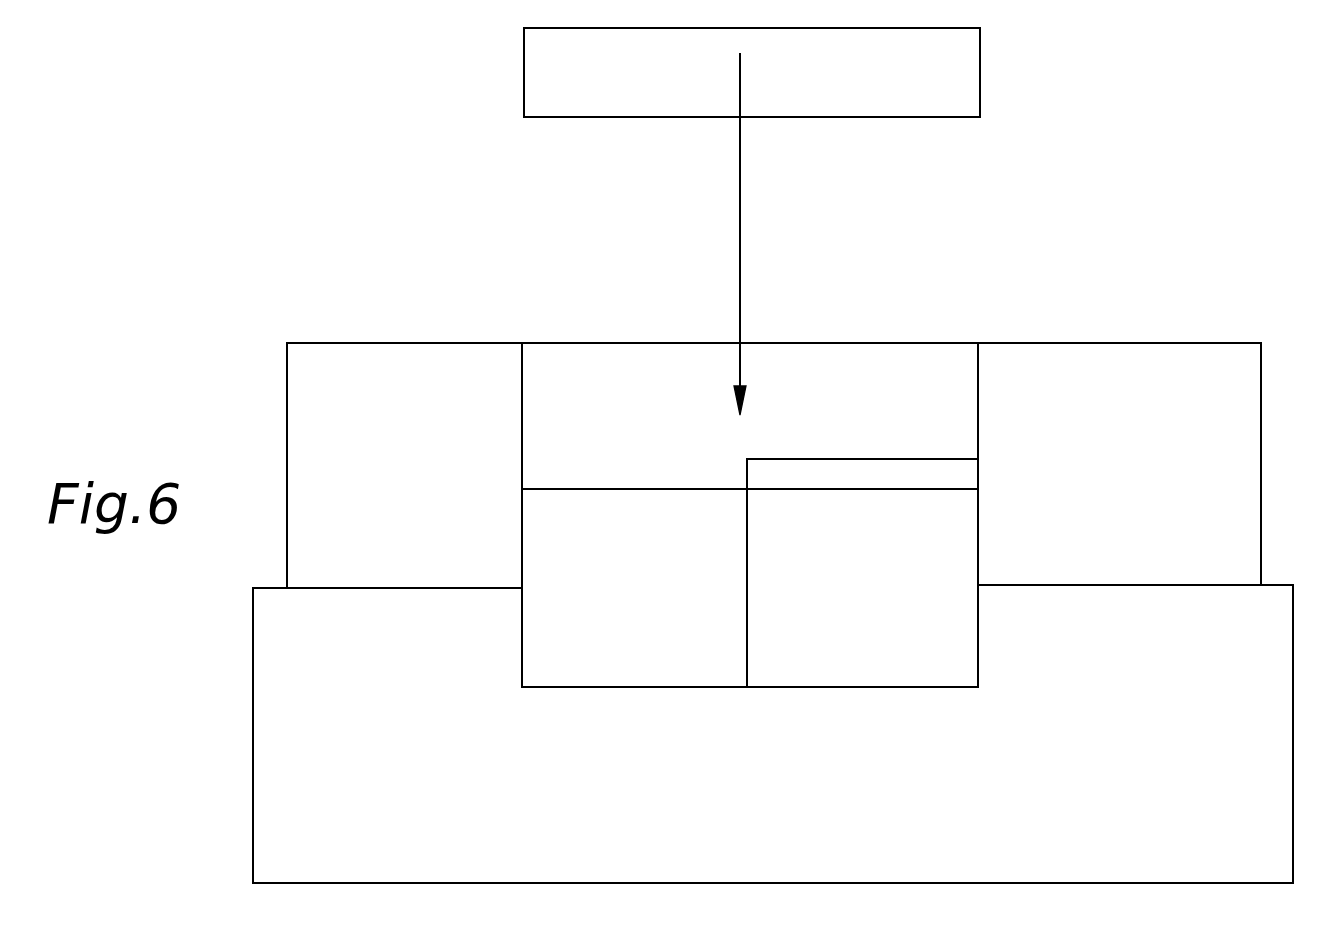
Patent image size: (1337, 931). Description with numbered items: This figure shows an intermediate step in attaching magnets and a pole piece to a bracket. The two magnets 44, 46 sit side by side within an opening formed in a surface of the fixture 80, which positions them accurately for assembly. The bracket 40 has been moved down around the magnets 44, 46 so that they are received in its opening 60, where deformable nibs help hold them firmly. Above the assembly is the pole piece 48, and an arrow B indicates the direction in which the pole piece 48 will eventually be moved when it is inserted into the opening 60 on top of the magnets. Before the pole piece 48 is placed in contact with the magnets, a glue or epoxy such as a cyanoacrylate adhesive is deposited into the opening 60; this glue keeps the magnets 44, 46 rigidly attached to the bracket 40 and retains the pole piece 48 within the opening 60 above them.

The pole piece 48 is at (549, 84).
The arrow B is at (738, 283).
The bracket 40 is at (345, 383).
The opening 60 is at (832, 376).
The magnet 44 is at (663, 510).
The magnet 46 is at (887, 488).
The fixture 80 is at (320, 776).